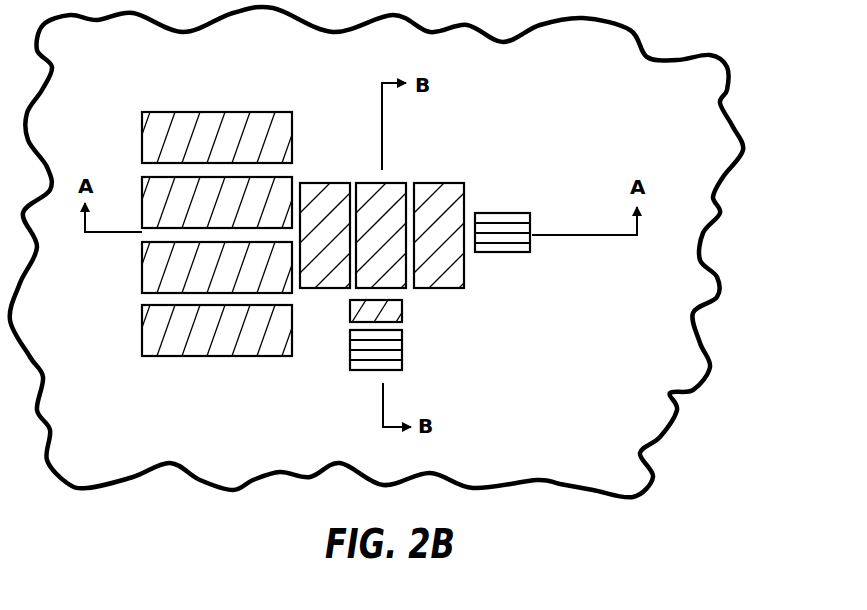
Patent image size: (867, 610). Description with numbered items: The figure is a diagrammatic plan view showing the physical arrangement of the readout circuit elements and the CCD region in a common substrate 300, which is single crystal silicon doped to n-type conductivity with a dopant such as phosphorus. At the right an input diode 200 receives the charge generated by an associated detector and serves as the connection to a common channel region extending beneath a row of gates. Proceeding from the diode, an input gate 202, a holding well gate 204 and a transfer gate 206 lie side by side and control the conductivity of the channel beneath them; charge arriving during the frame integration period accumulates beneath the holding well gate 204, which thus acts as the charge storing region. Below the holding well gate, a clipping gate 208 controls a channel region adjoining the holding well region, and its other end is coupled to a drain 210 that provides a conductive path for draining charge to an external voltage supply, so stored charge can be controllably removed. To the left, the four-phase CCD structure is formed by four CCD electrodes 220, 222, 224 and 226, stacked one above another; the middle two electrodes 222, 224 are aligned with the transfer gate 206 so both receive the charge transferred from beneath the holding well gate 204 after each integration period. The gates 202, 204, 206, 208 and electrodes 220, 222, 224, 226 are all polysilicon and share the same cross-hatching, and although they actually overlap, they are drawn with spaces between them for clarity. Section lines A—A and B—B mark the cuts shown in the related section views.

The input diode 200 is at (512, 213).
The input gate 202 is at (452, 185).
The holding well gate 204 is at (390, 183).
The transfer gate 206 is at (327, 183).
The clipping gate 208 is at (403, 313).
The drain 210 is at (402, 353).
The CCD electrode 220 is at (182, 112).
The CCD electrode 222 is at (142, 183).
The CCD electrode 224 is at (142, 258).
The CCD electrode 226 is at (213, 357).
The common substrate 300 is at (725, 128).